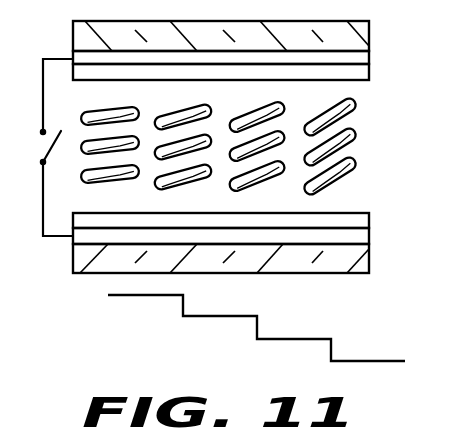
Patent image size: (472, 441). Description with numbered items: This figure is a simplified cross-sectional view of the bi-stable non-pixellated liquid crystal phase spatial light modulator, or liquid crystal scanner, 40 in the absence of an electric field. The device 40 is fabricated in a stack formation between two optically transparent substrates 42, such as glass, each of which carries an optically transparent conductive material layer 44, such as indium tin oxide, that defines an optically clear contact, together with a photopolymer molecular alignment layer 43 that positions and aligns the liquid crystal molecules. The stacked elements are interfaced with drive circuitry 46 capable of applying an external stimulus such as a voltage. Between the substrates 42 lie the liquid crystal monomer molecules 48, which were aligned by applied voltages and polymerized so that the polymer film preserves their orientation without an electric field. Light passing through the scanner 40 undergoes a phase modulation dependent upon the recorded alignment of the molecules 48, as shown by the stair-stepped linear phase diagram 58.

The bi-stable non-pixellated liquid crystal phase spatial light modulator 40 is at (58, 390).
The substrate 42 is at (370, 27).
The photopolymer molecular alignment layer 43 is at (370, 79).
The conductive material layer 44 is at (370, 58).
The drive circuitry 46 is at (52, 59).
The liquid crystal monomer molecules 48 is at (356, 131).
The stair-stepped linear phase diagram 58 is at (182, 331).